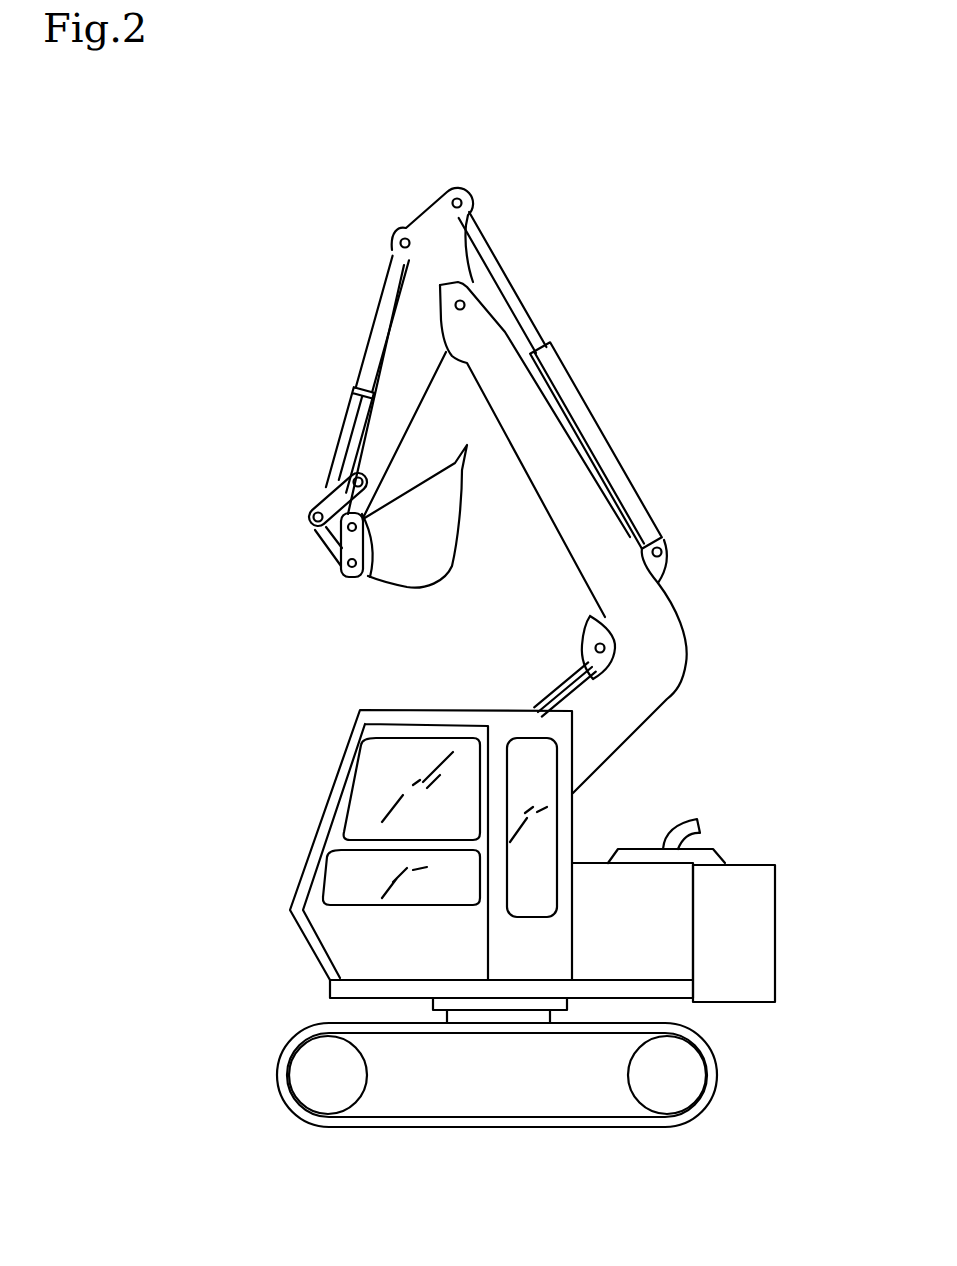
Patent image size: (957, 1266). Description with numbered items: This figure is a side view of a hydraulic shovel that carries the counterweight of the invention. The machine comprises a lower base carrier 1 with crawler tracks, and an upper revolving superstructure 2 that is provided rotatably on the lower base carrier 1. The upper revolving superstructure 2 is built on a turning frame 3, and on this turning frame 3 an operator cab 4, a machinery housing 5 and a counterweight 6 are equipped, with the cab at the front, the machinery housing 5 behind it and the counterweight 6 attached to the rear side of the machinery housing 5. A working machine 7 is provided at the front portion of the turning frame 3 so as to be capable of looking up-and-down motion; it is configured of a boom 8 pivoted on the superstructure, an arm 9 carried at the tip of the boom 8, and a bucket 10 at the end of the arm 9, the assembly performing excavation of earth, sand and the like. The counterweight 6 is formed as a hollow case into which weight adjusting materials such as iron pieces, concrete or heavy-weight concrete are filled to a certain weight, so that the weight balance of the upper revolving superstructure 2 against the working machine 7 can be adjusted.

The lower base carrier 1 is at (288, 1105).
The upper revolving superstructure 2 is at (733, 853).
The turning frame 3 is at (403, 990).
The operator cab 4 is at (370, 792).
The machinery housing 5 is at (590, 880).
The counterweight 6 is at (763, 952).
The working machine 7 is at (620, 447).
The boom 8 is at (665, 628).
The arm 9 is at (398, 357).
The bucket 10 is at (398, 562).